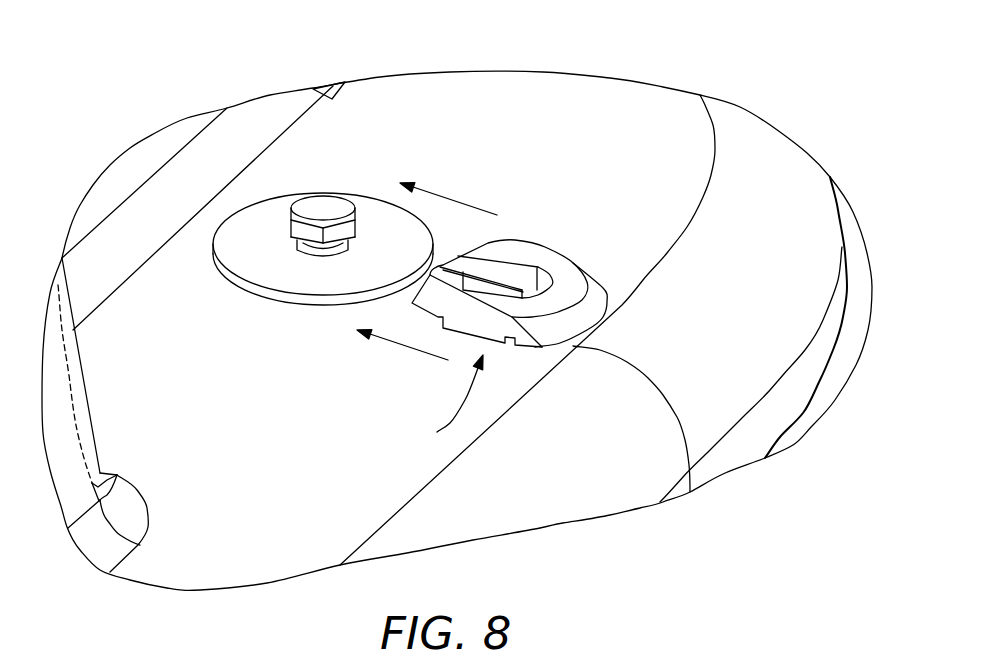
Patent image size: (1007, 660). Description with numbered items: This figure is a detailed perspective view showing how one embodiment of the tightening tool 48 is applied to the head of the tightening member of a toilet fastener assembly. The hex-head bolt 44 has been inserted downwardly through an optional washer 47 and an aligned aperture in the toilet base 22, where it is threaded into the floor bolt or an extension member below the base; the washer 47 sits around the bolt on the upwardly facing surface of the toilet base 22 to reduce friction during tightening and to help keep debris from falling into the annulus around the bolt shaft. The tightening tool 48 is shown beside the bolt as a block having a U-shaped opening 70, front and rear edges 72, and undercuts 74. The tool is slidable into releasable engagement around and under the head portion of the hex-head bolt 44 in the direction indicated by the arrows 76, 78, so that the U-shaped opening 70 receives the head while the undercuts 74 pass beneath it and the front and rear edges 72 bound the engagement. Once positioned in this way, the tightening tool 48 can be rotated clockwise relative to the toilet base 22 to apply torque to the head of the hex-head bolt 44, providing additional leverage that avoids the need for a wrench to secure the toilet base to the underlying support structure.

The toilet base 22 is at (582, 85).
The hex-head bolt 44 is at (313, 207).
The washer 47 is at (277, 273).
The tightening tool 48 is at (440, 401).
The U-shaped opening 70 is at (571, 309).
The front and rear edges 72 is at (617, 304).
The undercuts 74 is at (512, 343).
The arrow 76 is at (455, 203).
The arrow 78 is at (402, 350).